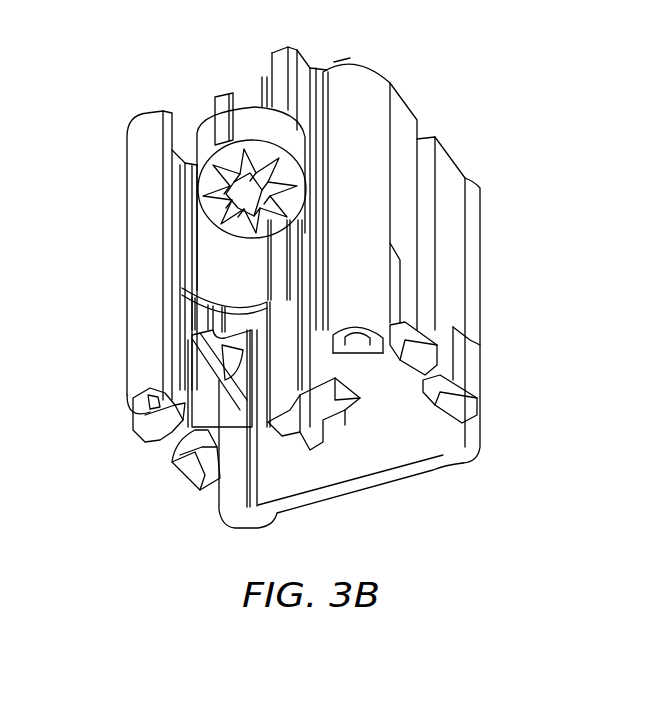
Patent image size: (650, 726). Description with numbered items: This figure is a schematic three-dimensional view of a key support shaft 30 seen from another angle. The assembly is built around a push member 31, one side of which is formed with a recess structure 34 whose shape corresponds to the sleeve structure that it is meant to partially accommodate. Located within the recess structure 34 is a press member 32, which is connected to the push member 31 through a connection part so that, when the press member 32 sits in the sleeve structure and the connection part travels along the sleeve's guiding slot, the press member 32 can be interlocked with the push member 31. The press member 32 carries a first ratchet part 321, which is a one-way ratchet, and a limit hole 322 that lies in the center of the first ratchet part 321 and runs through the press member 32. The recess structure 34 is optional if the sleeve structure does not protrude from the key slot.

The key support shaft 30 is at (70, 45).
The push member 31 is at (372, 112).
The press member 32 is at (208, 135).
The first ratchet part 321 is at (248, 172).
The limit hole 322 is at (236, 232).
The recess structure 34 is at (197, 277).